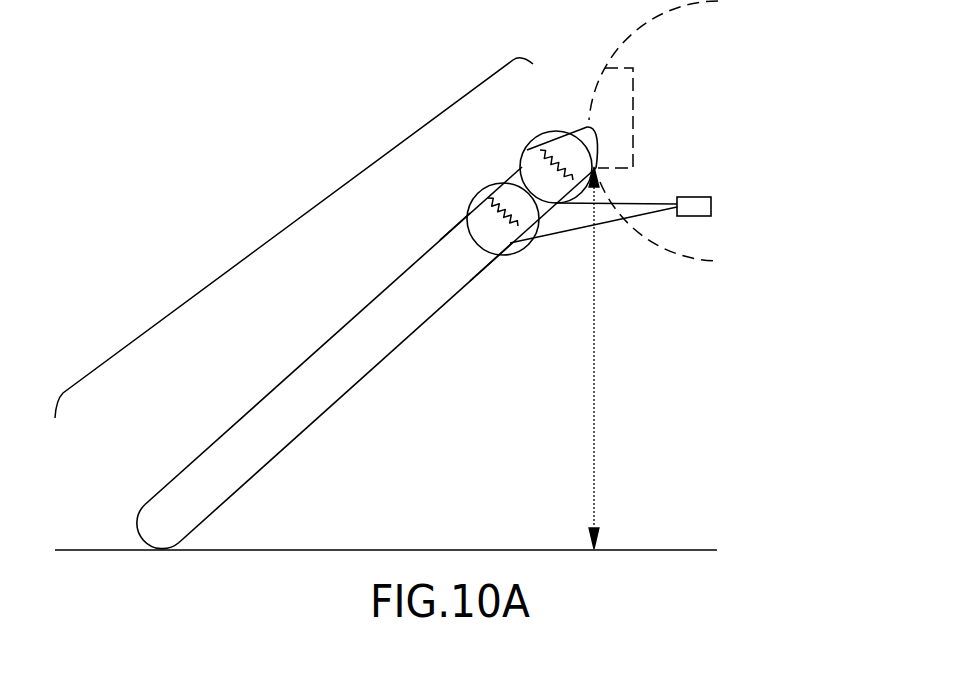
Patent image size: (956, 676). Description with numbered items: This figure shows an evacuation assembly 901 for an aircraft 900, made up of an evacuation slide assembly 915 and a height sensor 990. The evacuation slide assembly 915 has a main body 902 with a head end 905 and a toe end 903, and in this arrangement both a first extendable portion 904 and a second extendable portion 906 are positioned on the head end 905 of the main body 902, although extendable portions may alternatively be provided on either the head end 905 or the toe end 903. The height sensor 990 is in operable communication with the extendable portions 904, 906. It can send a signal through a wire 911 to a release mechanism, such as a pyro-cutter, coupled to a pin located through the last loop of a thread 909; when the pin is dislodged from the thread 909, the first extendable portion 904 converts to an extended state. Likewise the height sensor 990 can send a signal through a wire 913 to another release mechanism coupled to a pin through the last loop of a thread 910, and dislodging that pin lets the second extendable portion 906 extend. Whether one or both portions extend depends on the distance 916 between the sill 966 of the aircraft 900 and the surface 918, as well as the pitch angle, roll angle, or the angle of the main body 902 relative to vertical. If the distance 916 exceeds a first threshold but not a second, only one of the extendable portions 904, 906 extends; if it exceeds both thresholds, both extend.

The aircraft 900 is at (695, 124).
The evacuation assembly 901 is at (127, 140).
The main body 902 is at (297, 367).
The toe end 903 is at (147, 503).
The first extendable portion 904 is at (540, 148).
The head end 905 is at (457, 237).
The second extendable portion 906 is at (485, 200).
The thread 909 is at (520, 160).
The thread 910 is at (512, 245).
The wire 911 is at (630, 215).
The wire 913 is at (578, 224).
The evacuation slide assembly 915 is at (279, 235).
The distance 916 is at (592, 428).
The surface 918 is at (55, 550).
The sill 966 is at (598, 169).
The height sensor 990 is at (711, 208).